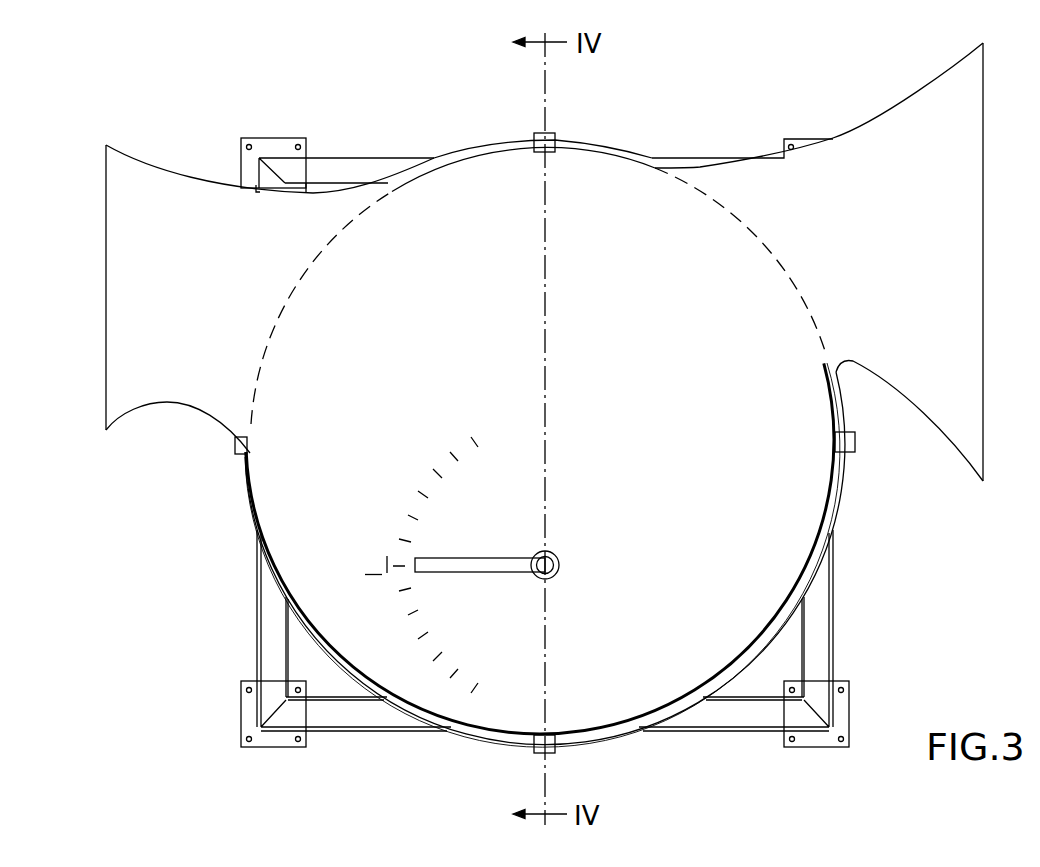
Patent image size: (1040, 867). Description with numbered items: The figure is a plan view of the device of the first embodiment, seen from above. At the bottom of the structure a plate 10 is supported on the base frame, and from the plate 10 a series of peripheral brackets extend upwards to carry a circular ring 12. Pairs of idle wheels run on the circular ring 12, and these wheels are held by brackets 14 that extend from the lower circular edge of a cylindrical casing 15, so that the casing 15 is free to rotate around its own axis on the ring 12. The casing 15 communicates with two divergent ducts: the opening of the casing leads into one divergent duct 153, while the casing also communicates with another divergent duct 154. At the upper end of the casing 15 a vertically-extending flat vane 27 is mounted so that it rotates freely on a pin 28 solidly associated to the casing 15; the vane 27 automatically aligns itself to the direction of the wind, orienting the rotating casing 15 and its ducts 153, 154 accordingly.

The plate 10 is at (816, 646).
The circular ring 12 is at (832, 516).
The brackets 14 is at (556, 131).
The cylindrical casing 15 is at (655, 439).
The flat vane 27 is at (475, 565).
The pin 28 is at (559, 565).
The divergent duct 153 is at (958, 271).
The divergent duct 154 is at (182, 306).